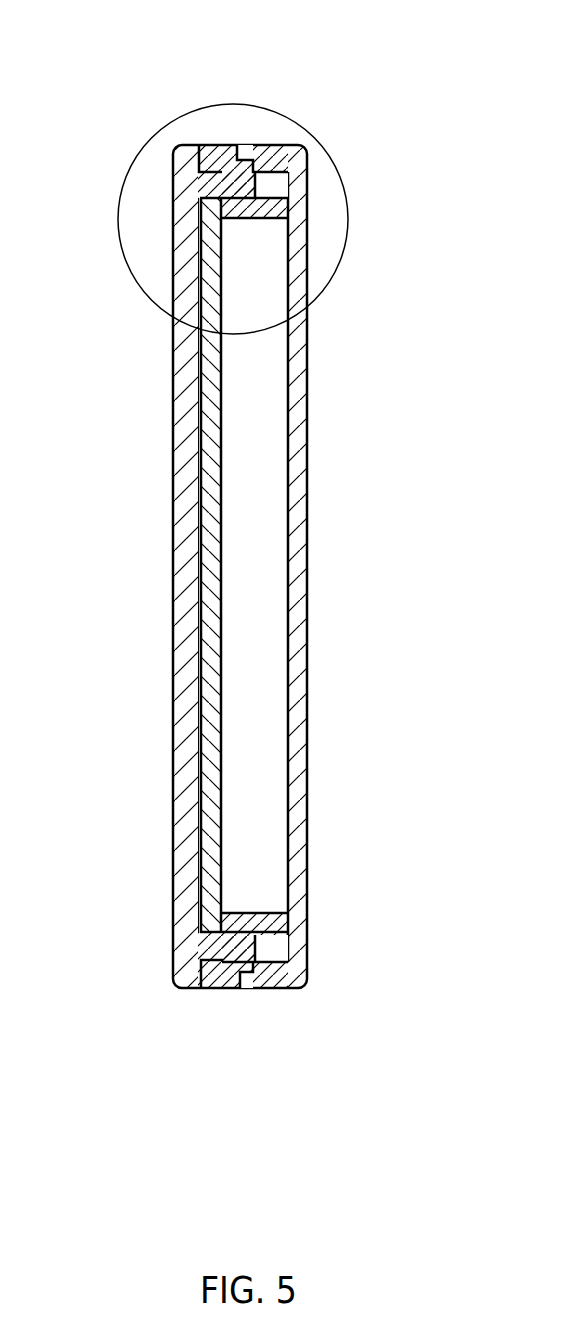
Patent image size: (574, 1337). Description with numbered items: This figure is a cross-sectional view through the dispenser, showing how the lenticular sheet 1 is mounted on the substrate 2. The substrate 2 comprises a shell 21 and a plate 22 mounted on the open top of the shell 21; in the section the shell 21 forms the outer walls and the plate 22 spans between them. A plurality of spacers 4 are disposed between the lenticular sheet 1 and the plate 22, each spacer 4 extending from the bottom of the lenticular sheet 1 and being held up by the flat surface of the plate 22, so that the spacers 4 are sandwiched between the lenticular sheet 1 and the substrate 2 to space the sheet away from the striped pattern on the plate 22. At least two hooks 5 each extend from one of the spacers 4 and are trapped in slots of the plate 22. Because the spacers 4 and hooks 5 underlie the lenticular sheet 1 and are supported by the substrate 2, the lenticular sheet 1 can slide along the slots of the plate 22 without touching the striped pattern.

The lenticular sheet 1 is at (185, 347).
The substrate 2 is at (315, 33).
The shell 21 is at (285, 145).
The plate 22 is at (235, 148).
The spacer 4 is at (200, 148).
The hook 5 is at (233, 185).